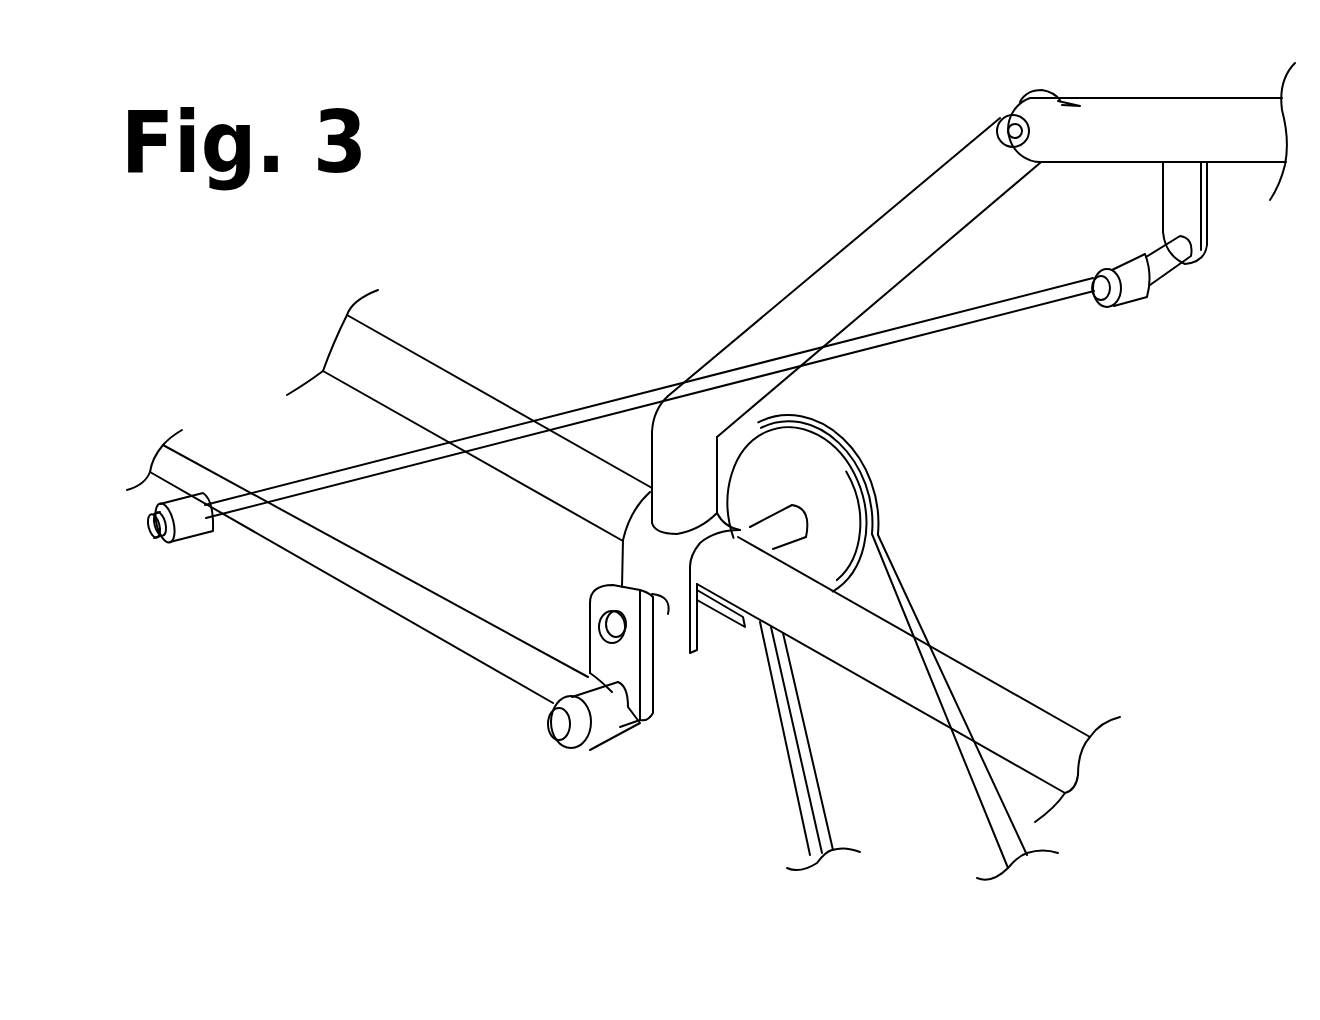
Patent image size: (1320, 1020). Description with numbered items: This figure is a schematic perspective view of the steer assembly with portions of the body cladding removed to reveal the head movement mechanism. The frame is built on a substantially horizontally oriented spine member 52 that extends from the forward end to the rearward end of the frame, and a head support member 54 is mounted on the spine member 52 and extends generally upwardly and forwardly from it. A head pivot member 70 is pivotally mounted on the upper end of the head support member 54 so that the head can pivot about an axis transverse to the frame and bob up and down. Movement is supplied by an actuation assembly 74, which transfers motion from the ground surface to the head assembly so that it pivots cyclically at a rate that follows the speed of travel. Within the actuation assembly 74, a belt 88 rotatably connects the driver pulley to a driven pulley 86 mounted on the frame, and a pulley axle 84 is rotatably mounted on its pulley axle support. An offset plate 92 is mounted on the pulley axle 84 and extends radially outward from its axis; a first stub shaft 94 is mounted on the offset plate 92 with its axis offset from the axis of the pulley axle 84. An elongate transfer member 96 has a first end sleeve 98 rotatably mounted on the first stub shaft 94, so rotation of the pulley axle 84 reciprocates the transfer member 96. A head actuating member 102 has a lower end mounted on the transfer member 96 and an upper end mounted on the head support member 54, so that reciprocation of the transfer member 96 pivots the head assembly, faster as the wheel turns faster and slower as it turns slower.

The spine member 52 is at (440, 393).
The head support member 54 is at (867, 257).
The head pivot member 70 is at (1120, 130).
The actuation assembly 74 is at (700, 707).
The pulley axle 84 is at (700, 637).
The driven pulley 86 is at (830, 523).
The belt 88 is at (902, 593).
The offset plate 92 is at (607, 660).
The first stub shaft 94 is at (550, 733).
The transfer member 96 is at (307, 545).
The first end sleeve 98 is at (630, 727).
The head actuating member 102 is at (923, 328).